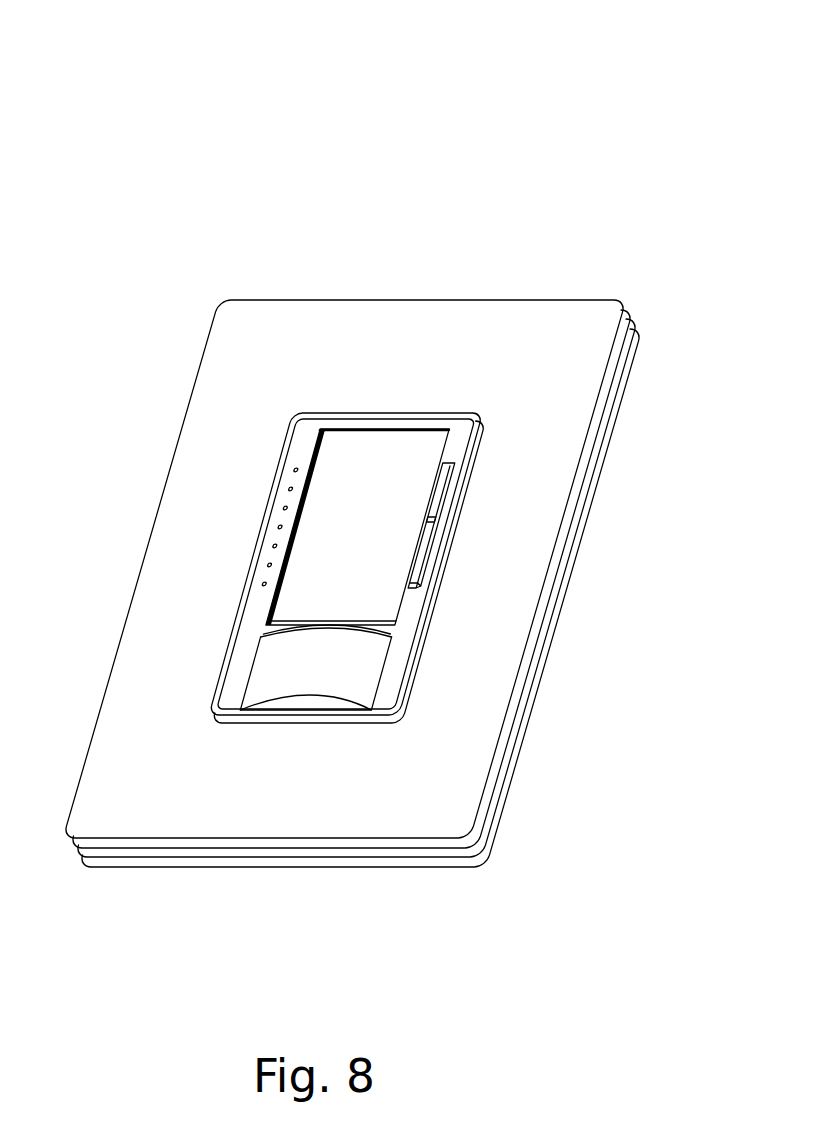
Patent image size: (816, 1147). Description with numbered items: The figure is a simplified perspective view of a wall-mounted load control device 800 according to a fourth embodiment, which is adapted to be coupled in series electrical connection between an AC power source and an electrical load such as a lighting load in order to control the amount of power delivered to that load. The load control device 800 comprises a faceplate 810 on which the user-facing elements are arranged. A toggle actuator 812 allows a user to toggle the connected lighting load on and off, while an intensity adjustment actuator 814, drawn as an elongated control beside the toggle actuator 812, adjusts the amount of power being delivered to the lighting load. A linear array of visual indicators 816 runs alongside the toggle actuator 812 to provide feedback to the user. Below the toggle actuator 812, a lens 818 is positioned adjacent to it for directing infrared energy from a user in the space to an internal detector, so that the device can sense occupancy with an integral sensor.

The load control device 800 is at (363, 516).
The faceplate 810 is at (155, 807).
The toggle actuator 812 is at (362, 508).
The intensity adjustment actuator 814 is at (467, 512).
The visual indicators 816 is at (305, 452).
The lens 818 is at (272, 677).